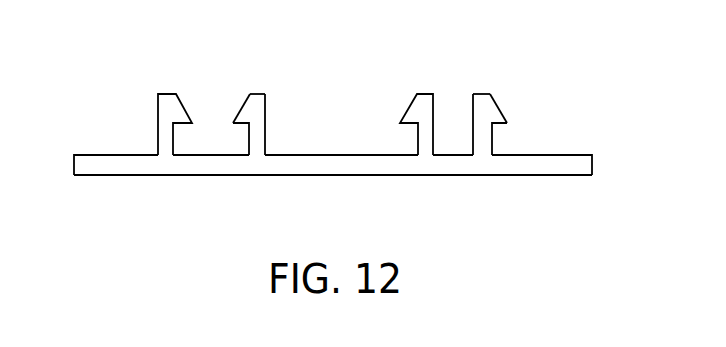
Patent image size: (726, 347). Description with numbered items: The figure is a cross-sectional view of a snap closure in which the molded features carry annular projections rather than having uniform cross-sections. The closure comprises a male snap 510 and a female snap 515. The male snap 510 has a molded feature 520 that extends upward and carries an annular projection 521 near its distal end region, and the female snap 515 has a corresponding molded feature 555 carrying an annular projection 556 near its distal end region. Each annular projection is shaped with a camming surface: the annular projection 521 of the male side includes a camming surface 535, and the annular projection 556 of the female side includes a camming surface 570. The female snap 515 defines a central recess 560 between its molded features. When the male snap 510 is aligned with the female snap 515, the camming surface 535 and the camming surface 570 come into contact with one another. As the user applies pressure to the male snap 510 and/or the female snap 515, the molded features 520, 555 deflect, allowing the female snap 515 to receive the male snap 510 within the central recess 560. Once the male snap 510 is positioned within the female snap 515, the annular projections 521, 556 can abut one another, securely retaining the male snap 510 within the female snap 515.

The male snap 510 is at (333, 128).
The female snap 515 is at (228, 92).
The molded feature 520 is at (514, 104).
The annular projection 521 is at (493, 115).
The camming surface 535 is at (503, 113).
The molded feature 555 is at (291, 92).
The annular projection 556 is at (291, 93).
The central recess 560 is at (223, 147).
The camming surface 570 is at (243, 113).